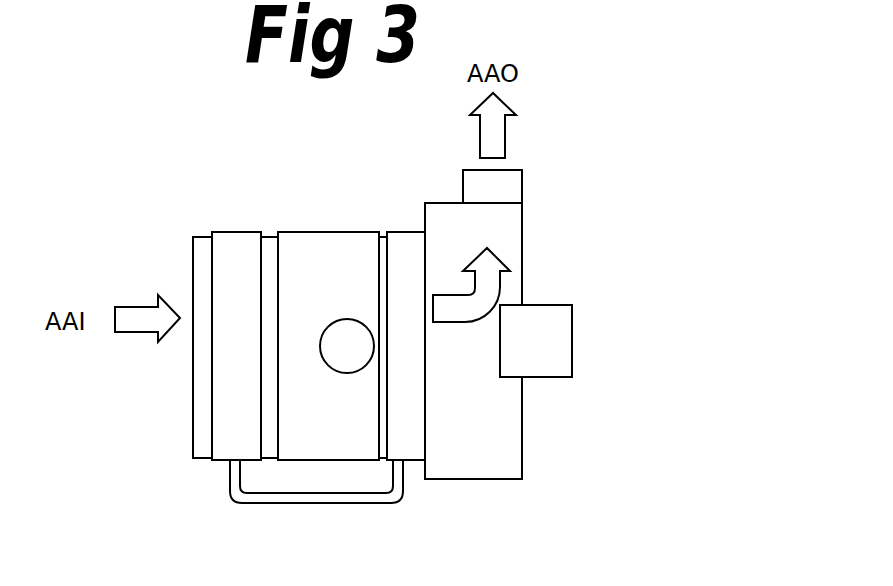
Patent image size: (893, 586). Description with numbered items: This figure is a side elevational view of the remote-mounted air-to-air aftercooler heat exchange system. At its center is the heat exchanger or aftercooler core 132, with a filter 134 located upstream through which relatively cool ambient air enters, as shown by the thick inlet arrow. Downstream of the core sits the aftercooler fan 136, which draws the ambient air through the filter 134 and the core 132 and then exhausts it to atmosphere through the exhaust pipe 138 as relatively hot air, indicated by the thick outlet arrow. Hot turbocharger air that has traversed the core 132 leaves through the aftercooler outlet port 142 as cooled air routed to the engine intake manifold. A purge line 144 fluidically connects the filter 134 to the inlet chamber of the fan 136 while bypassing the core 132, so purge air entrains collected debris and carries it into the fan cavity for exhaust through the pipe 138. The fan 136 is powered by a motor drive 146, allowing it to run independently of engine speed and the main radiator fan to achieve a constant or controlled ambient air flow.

The aftercooler core 132 is at (358, 442).
The filter 134 is at (237, 402).
The aftercooler fan 136 is at (477, 453).
The exhaust pipe 138 is at (507, 187).
The aftercooler outlet port 142 is at (347, 318).
The purge line 144 is at (307, 503).
The motor drive 146 is at (553, 352).